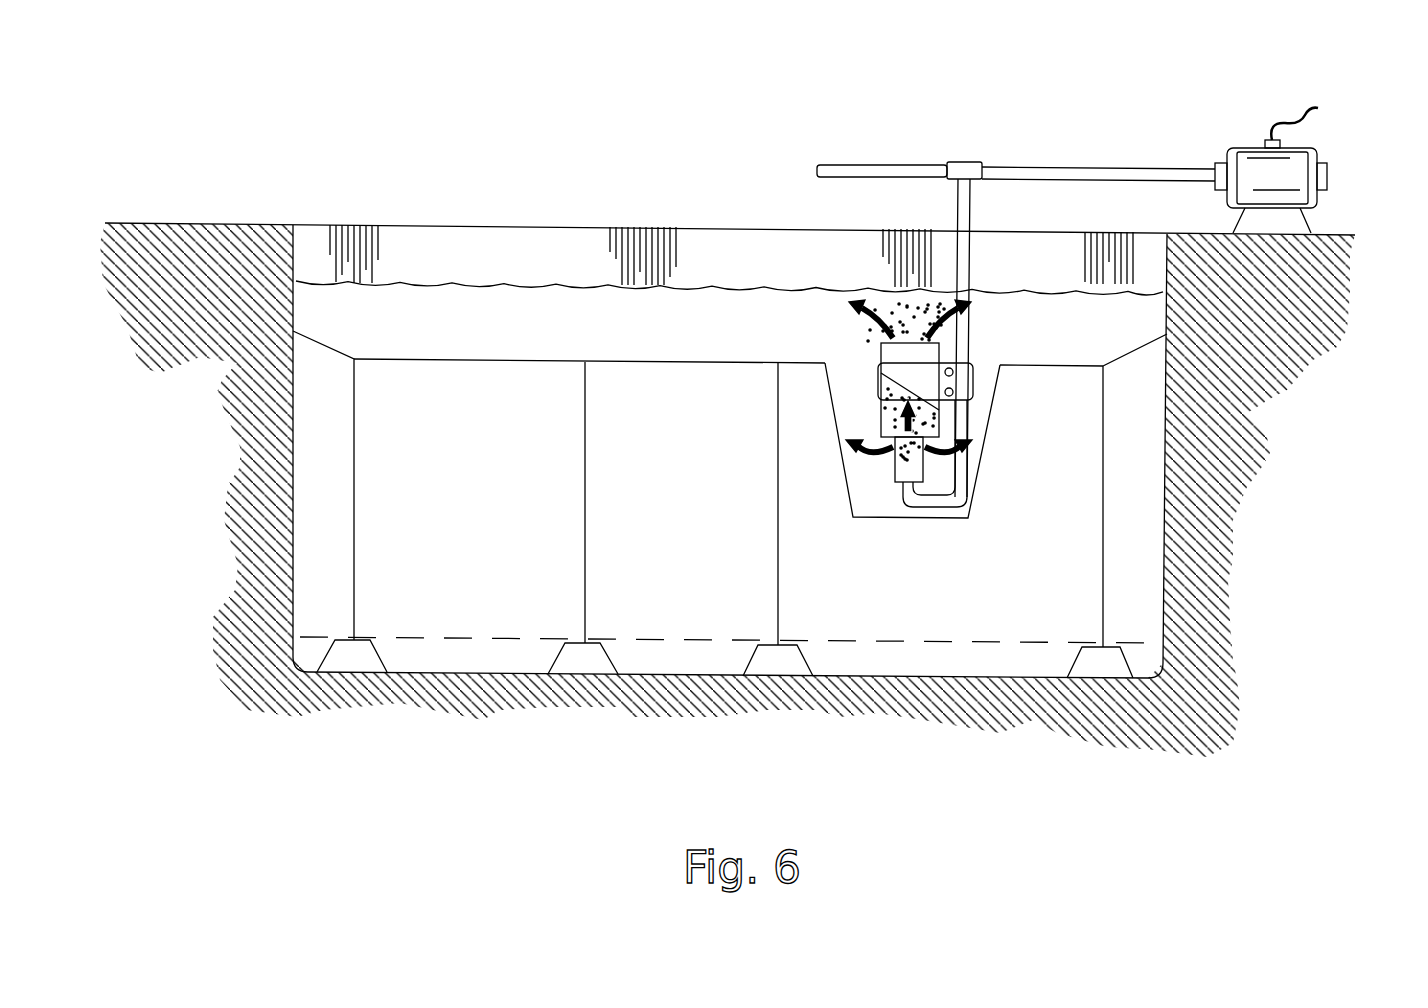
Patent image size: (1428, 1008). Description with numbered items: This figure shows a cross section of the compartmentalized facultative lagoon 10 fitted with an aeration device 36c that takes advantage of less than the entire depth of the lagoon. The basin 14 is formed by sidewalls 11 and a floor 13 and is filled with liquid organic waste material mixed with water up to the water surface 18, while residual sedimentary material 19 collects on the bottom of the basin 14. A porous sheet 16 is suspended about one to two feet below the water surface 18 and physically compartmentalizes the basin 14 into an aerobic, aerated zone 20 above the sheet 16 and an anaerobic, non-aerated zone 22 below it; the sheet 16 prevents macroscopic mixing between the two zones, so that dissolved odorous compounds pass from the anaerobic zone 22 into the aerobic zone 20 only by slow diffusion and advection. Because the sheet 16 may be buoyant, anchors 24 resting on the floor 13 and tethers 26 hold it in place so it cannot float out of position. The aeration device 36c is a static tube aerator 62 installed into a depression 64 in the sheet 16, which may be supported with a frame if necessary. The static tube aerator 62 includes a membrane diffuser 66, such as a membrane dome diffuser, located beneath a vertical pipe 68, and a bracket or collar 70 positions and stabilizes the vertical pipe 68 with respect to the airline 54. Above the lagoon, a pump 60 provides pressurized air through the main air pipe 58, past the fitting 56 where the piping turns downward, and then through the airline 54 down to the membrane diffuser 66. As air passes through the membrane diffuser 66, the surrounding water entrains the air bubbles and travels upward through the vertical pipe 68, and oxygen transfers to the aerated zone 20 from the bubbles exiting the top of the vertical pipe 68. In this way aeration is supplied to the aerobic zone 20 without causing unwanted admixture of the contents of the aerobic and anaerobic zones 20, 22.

The compartmentalized facultative lagoon 10 is at (183, 458).
The sidewalls 11 is at (293, 525).
The floor 13 is at (633, 678).
The basin 14 is at (320, 413).
The sheet 16 is at (1170, 377).
The water surface 18 is at (513, 283).
The residual sedimentary material 19 is at (665, 657).
The aerobic zone 20 is at (1148, 327).
The anaerobic zone 22 is at (1137, 593).
The anchors 24 is at (1097, 663).
The tethers 26 is at (355, 583).
The aeration device 36c is at (978, 424).
The airline 54 is at (972, 225).
The tee fitting 56 is at (965, 162).
The main air pipe 58 is at (1066, 167).
The pump 60 is at (1242, 148).
The static tube aerator 62 is at (852, 357).
The depression 64 is at (977, 478).
The membrane diffuser 66 is at (895, 473).
The vertical pipe 68 is at (893, 349).
The bracket or collar 70 is at (975, 373).